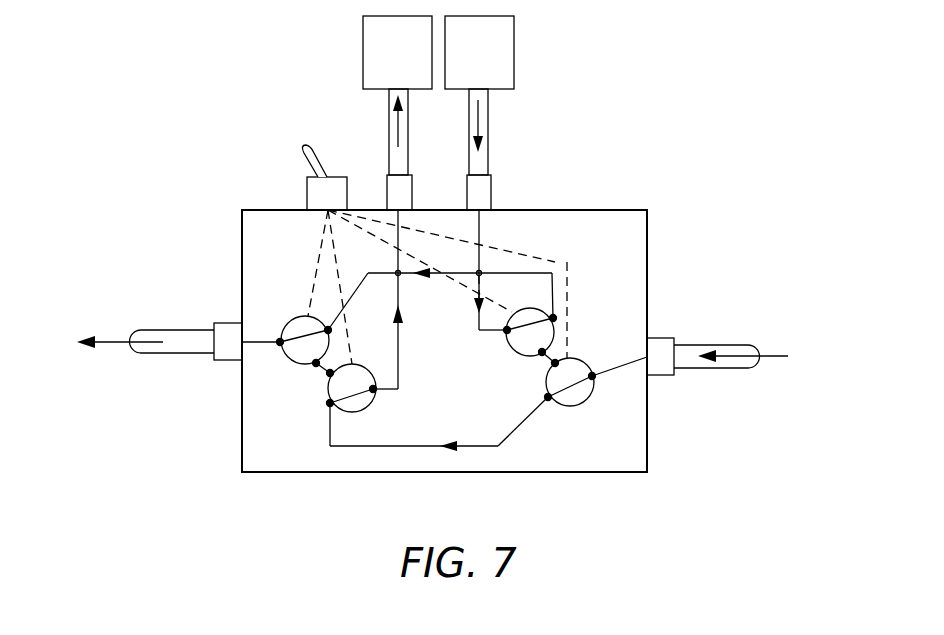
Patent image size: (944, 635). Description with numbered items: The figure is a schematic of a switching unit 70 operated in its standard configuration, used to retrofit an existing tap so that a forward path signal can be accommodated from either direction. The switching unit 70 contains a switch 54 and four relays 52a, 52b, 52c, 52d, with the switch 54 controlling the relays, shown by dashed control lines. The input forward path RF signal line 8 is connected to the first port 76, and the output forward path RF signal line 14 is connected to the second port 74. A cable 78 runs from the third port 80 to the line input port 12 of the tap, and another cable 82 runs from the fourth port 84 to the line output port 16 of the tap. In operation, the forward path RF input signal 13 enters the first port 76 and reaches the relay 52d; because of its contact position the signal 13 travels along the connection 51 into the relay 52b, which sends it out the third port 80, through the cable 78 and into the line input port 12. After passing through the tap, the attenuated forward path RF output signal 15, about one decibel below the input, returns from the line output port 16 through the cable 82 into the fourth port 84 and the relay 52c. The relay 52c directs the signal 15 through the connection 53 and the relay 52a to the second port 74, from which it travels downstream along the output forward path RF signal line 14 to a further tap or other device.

The switching unit 70 is at (748, 36).
The line input port 12 is at (397, 52).
The line output port 16 is at (479, 52).
The forward path RF input signal 13 is at (389, 117).
The attenuated forward path RF output signal 15 is at (488, 110).
The cable 78 is at (389, 152).
The third port 80 is at (412, 186).
The cable 82 is at (488, 155).
The fourth port 84 is at (491, 195).
The switch 54 is at (307, 193).
The connection 53 is at (535, 262).
The connection 51 is at (415, 448).
The relay 52a is at (302, 366).
The relay 52b is at (367, 408).
The relay 52c is at (523, 356).
The relay 52d is at (575, 406).
The second port 74 is at (222, 322).
The output forward path RF signal line 14 is at (178, 355).
The first port 76 is at (668, 337).
The input forward path RF signal line 8 is at (720, 370).